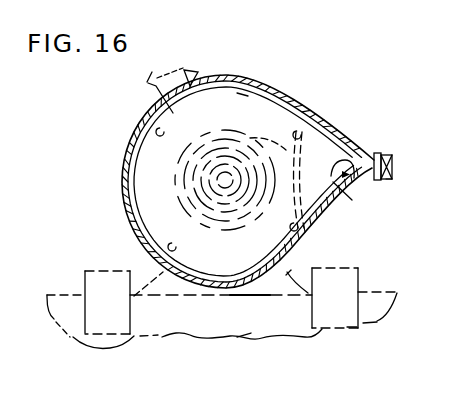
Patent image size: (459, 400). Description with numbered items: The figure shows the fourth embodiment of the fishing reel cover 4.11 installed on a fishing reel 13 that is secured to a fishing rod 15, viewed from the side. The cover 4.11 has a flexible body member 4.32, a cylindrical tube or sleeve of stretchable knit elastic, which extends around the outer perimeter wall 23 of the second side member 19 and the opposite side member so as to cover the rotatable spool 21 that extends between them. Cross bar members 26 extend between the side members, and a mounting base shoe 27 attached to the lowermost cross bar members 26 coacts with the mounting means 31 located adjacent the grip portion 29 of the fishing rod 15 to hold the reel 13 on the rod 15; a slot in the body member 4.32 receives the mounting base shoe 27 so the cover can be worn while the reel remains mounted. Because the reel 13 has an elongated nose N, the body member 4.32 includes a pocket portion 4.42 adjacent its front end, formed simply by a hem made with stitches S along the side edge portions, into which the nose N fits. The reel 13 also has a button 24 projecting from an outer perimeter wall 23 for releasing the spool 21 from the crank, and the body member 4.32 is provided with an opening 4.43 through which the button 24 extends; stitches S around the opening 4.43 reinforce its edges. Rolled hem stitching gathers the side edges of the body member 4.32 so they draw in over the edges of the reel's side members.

The fishing reel 13 is at (130, 204).
The fishing rod 15 is at (190, 342).
The second side member 19 is at (157, 150).
The rotatable spool 21 is at (226, 181).
The outer perimeter wall 23 is at (240, 73).
The button 24 is at (154, 80).
The cross bar member 26 is at (158, 130).
The mounting base shoe 27 is at (284, 281).
The grip portion 29 is at (249, 326).
The mounting means 31 is at (104, 333).
The fishing reel cover 4.11 is at (350, 102).
The flexible body member 4.32 is at (352, 90).
The pocket portion 4.42 is at (350, 156).
The opening 4.43 is at (188, 71).
The stitches S is at (386, 179).
The elongated nose N is at (355, 203).